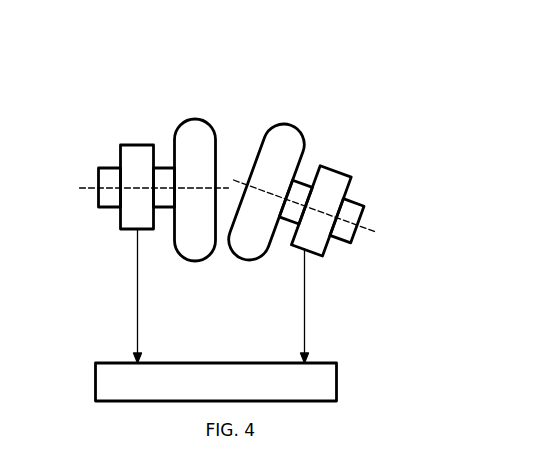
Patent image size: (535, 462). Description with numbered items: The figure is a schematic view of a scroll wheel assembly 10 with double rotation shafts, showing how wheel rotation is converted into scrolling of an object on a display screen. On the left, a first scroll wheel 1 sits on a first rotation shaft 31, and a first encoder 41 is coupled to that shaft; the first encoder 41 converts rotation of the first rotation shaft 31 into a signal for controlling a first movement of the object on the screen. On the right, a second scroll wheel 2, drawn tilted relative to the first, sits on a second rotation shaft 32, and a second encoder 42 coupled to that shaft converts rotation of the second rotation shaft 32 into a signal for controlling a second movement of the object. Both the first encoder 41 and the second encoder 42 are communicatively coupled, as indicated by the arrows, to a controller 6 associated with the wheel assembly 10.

The scroll wheel assembly 10 is at (125, 75).
The first scroll wheel 1 is at (197, 120).
The second scroll wheel 2 is at (290, 123).
The first rotation shaft 31 is at (107, 167).
The second rotation shaft 32 is at (342, 200).
The first encoder 41 is at (130, 144).
The second encoder 42 is at (327, 167).
The controller 6 is at (218, 363).